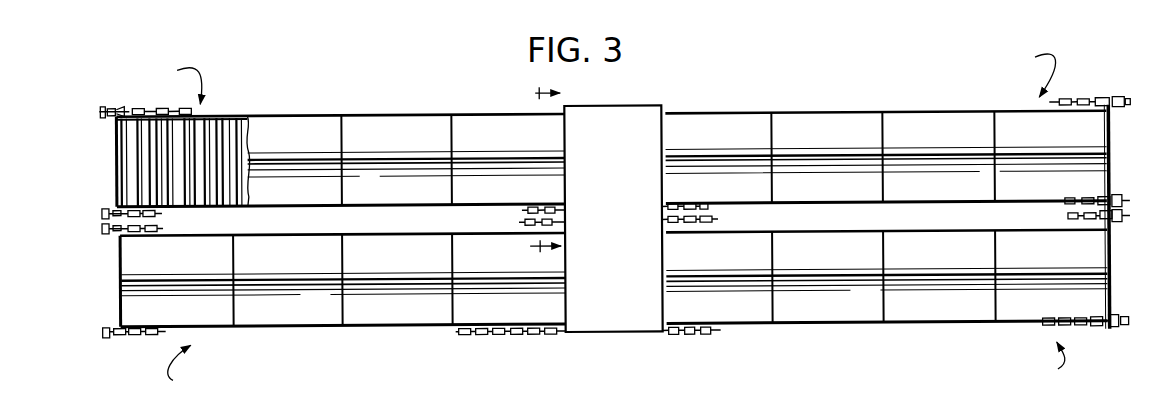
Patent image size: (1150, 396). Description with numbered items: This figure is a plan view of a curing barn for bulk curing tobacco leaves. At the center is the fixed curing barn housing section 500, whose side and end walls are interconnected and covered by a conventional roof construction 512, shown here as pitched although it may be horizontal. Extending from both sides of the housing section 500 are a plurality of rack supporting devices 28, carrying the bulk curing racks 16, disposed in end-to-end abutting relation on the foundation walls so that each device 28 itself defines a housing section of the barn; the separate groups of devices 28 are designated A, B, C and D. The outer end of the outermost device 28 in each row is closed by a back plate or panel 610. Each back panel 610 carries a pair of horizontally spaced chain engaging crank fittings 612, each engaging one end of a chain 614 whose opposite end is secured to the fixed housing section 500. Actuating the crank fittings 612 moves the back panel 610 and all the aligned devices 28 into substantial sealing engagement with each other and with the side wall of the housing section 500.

The fixed curing barn housing section 500 is at (605, 219).
The roof construction 512 is at (626, 261).
The back plate or panel 610 is at (607, 230).
The chain engaging crank fittings 612 is at (110, 108).
The chain 614 is at (531, 224).
The bulk curing racks 16 is at (214, 153).
The rack supporting devices 28 is at (472, 107).